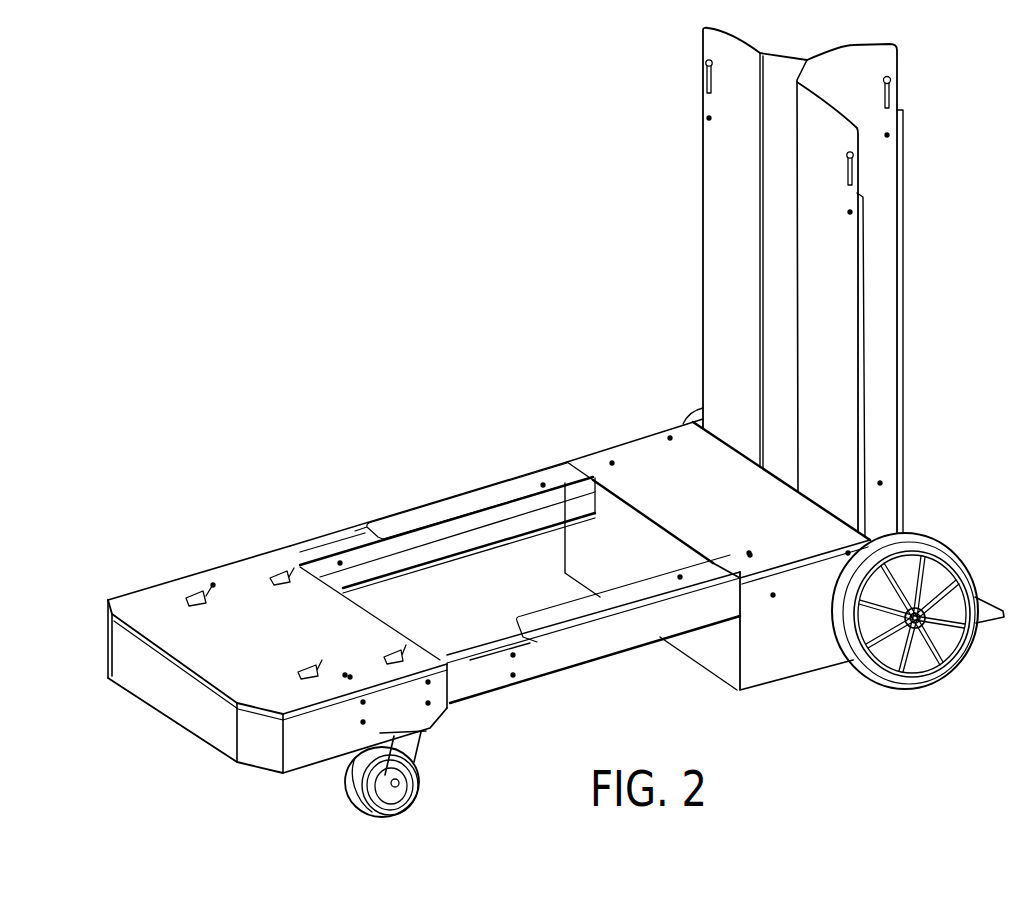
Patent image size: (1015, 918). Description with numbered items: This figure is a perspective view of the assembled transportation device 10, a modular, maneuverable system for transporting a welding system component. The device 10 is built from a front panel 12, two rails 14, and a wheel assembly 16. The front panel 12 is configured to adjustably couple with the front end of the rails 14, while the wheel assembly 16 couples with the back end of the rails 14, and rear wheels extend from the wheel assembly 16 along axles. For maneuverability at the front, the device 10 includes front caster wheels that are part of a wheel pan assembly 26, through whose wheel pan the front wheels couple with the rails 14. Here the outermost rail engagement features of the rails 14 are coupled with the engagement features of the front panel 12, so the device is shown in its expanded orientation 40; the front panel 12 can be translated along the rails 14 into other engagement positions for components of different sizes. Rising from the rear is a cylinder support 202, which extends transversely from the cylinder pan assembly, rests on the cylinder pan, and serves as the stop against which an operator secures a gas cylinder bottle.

The transportation device 10 is at (181, 266).
The front panel 12 is at (119, 696).
The rails 14 is at (489, 581).
The wheel assembly 16 is at (625, 428).
The wheel pan assembly 26 is at (447, 737).
The expanded orientation 40 is at (312, 112).
The cylinder support 202 is at (677, 84).